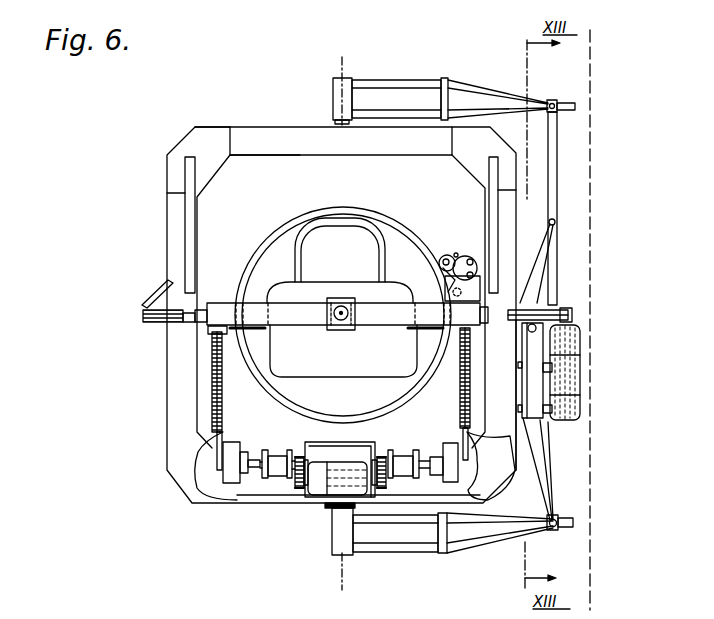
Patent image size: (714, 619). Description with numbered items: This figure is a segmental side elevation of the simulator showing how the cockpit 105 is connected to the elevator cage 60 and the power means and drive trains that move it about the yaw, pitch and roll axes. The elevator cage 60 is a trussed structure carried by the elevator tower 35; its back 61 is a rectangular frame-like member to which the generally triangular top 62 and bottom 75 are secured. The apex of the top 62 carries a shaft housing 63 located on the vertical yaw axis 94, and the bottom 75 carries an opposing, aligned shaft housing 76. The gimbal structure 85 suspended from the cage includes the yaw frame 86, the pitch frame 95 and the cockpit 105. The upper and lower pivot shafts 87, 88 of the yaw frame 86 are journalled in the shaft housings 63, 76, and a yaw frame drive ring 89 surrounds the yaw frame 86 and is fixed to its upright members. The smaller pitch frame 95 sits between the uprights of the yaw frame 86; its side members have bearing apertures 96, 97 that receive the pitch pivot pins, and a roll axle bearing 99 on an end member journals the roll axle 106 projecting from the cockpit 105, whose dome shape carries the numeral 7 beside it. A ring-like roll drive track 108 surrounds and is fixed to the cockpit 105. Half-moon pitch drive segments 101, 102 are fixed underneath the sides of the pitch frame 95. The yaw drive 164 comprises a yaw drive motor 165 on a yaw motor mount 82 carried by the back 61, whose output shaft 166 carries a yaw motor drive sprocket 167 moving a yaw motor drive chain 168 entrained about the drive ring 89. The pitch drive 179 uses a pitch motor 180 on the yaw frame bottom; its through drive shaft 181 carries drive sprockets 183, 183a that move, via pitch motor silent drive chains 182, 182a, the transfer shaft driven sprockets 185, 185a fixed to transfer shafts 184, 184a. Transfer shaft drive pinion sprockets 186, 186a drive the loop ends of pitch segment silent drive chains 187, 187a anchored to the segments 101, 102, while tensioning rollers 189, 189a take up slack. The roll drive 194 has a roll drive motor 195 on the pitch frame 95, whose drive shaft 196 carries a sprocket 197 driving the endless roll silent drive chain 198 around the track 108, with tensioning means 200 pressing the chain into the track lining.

The dome housing 7 is at (350, 283).
The elevator tower 35 is at (600, 71).
The elevator cage 60 is at (443, 76).
The back of the elevator cage 61 is at (557, 166).
The top of the elevator cage 62 is at (386, 80).
The shaft housing 63 is at (333, 97).
The bottom of the elevator cage 75 is at (427, 551).
The shaft housing 76 is at (332, 533).
The yaw motor mount 82 is at (548, 395).
The gimbal structure 85 is at (218, 120).
The yaw frame 86 is at (248, 134).
The upper pivot shaft 87 is at (338, 126).
The lower pivot shaft 88 is at (342, 512).
The yaw frame drive ring 89 is at (145, 322).
The yaw axis 94 is at (342, 57).
The pitch frame 95 is at (260, 313).
The bearing aperture 96 is at (213, 313).
The bearing aperture 97 is at (442, 327).
The roll axle bearing 99 is at (337, 317).
The pitch drive segment 101 is at (213, 375).
The pitch drive segment 102 is at (460, 400).
The cockpit 105 is at (342, 319).
The roll axle 106 is at (348, 324).
The roll drive track 108 is at (278, 233).
The yaw drive 164 is at (612, 332).
The yaw drive motor 165 is at (580, 375).
The output shaft 166 is at (563, 308).
The yaw motor drive sprocket 167 is at (573, 314).
The yaw motor drive chain 168 is at (145, 312).
The pitch drive 179 is at (348, 430).
The pitch motor 180 is at (350, 470).
The through drive shaft 181 is at (296, 486).
The pitch motor silent drive chain 182 is at (297, 478).
The pitch motor silent drive chain 182a is at (398, 483).
The pitch motor drive sprocket 183 is at (307, 489).
The pitch motor drive sprocket 183a is at (378, 482).
The transfer shaft 184 is at (275, 456).
The transfer shaft 184a is at (415, 450).
The transfer shaft driven sprocket 185 is at (298, 452).
The transfer shaft driven sprocket 185a is at (395, 450).
The transfer shaft drive pinion sprocket 186 is at (218, 470).
The transfer shaft drive pinion sprocket 186a is at (483, 503).
The pitch segment silent drive chain 187 is at (212, 393).
The pitch segment silent drive chain 187a is at (460, 378).
The tensioning roller 189 is at (213, 435).
The tensioning roller 189a is at (495, 466).
The roll drive 194 is at (455, 244).
The roll drive motor 195 is at (470, 260).
The drive shaft 196 is at (473, 282).
The sprocket 197 is at (448, 281).
The roll silent drive chain 198 is at (443, 268).
The tensioning means 200 is at (447, 265).